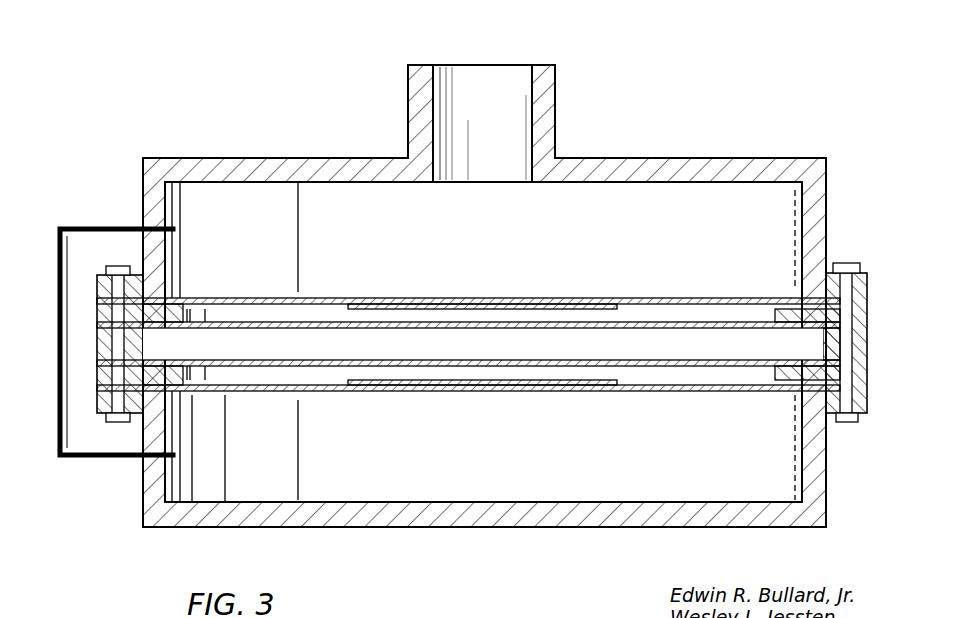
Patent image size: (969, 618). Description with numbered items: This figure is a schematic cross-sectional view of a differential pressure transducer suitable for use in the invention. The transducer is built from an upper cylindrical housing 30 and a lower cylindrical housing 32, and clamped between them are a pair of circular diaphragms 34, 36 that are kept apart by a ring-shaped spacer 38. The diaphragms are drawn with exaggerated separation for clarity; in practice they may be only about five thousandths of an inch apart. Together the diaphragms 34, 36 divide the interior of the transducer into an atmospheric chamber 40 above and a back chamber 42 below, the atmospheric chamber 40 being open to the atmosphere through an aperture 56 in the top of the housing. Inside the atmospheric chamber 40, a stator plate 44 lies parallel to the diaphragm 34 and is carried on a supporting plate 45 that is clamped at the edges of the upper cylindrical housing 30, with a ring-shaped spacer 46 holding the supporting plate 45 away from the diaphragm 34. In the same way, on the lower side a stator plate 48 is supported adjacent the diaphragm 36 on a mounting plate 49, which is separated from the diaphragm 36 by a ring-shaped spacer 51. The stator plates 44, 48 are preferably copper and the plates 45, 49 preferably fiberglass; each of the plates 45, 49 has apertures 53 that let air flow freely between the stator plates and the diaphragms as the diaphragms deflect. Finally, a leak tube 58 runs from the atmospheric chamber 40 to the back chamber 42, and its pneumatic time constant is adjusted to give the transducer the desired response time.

The upper cylindrical housing 30 is at (737, 155).
The lower cylindrical housing 32 is at (368, 518).
The circular diaphragm 34 is at (620, 329).
The circular diaphragm 36 is at (705, 361).
The ring-shaped spacer 38 is at (863, 343).
The atmospheric chamber 40 is at (620, 226).
The back chamber 42 is at (586, 472).
The stator plate 44 is at (479, 307).
The supporting plate 45 is at (323, 300).
The ring-shaped spacer 46 is at (790, 308).
The stator plate 48 is at (490, 392).
The mounting plate 49 is at (338, 392).
The ring-shaped spacer 51 is at (777, 370).
The apertures 53 is at (271, 300).
The aperture 56 is at (485, 88).
The leak tube 58 is at (92, 228).